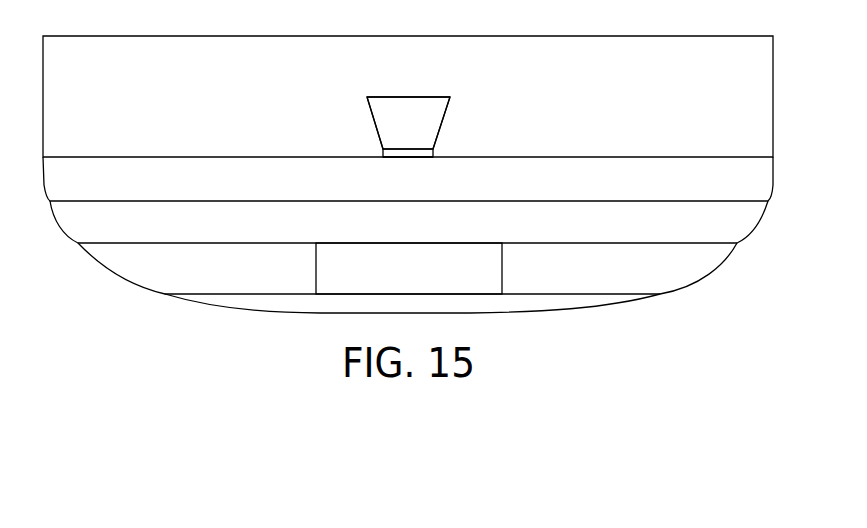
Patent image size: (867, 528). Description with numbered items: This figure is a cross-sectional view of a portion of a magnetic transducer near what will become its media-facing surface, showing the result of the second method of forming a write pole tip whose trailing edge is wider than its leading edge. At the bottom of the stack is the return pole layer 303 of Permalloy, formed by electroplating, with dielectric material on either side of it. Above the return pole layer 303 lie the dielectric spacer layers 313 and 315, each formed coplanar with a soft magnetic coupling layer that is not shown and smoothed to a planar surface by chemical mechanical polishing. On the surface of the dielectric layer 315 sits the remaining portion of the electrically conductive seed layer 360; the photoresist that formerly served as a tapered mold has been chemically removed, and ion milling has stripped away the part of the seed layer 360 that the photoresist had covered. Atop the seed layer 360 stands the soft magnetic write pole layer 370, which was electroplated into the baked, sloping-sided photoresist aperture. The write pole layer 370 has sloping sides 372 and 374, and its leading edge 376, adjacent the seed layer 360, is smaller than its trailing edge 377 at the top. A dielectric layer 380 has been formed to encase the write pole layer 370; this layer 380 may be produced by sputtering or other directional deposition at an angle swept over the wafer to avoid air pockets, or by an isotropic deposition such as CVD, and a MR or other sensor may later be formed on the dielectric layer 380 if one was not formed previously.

The return pole layer 303 is at (428, 279).
The dielectric spacer layer 313 is at (646, 232).
The dielectric layer 315 is at (486, 191).
The seed layer 360 is at (383, 152).
The write pole layer 370 is at (427, 135).
The sloping side 372 is at (373, 127).
The sloping side 374 is at (446, 127).
The leading edge 376 is at (409, 157).
The trailing edge 377 is at (409, 97).
The dielectric layer 380 is at (215, 109).